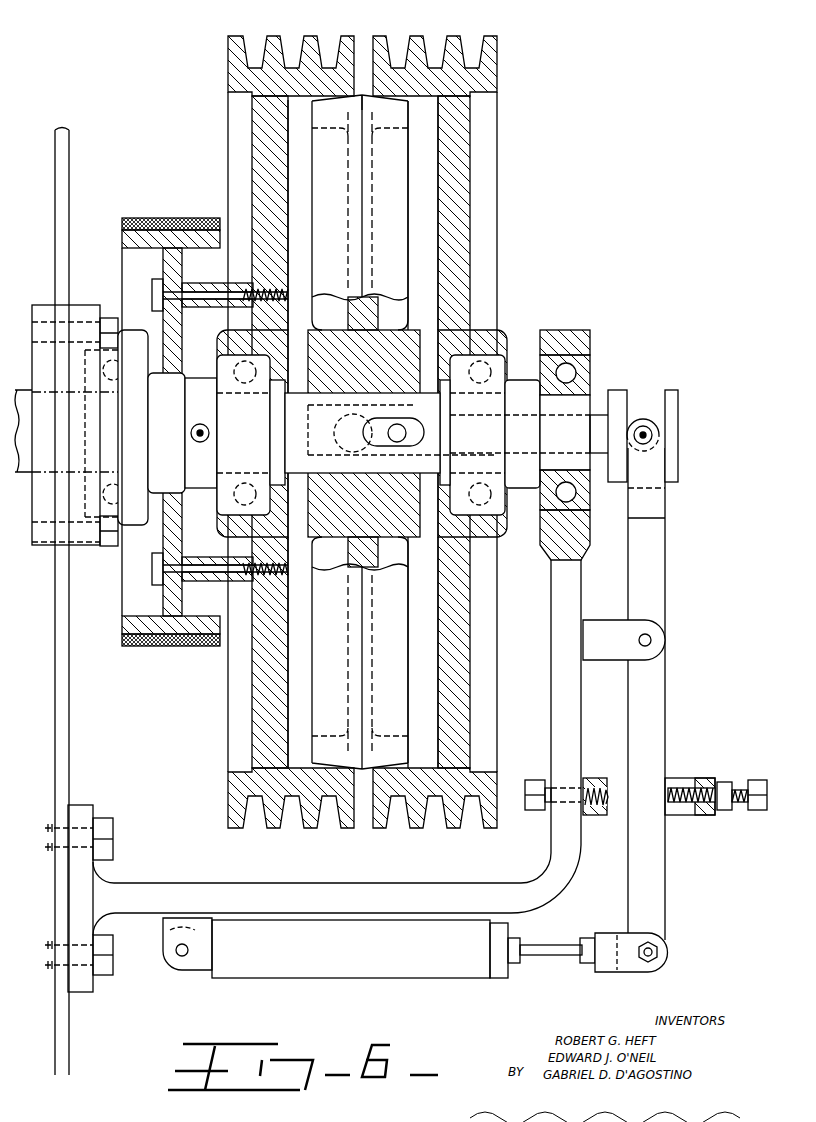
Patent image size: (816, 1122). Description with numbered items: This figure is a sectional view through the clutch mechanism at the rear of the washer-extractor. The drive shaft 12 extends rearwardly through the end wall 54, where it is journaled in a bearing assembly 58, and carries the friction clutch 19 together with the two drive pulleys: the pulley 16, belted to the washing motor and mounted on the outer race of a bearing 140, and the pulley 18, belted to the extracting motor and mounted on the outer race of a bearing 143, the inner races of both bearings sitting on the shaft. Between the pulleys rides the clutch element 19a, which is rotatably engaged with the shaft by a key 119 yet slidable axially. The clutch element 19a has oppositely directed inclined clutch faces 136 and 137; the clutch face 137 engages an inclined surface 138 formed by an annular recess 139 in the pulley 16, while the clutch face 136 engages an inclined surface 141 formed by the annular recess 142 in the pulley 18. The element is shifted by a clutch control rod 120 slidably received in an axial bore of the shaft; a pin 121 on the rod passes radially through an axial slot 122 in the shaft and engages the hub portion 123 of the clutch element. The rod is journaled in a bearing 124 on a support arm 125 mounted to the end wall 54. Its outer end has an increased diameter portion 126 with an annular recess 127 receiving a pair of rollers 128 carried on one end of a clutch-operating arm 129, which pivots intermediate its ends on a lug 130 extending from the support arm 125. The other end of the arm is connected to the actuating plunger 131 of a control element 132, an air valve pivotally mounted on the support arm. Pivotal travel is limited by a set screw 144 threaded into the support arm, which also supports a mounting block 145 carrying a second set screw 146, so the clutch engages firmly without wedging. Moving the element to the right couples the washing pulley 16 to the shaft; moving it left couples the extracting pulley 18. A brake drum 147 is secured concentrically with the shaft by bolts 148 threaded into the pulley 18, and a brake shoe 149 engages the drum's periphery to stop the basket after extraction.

The drive shaft 12 is at (32, 395).
The pulley 16 is at (497, 48).
The pulley 18 is at (236, 92).
The friction clutch 19 is at (412, 165).
The clutch element 19a is at (405, 213).
The end wall 54 is at (55, 143).
The bearing assembly 58 is at (128, 533).
The key 119 is at (442, 348).
The clutch control rod 120 is at (596, 420).
The pin 121 is at (406, 433).
The axial slot 122 is at (375, 446).
The hub portion 123 is at (405, 385).
The bearing 124 is at (590, 345).
The support arm 125 is at (556, 667).
The increased diameter portion 126 is at (676, 394).
The annular recess 127 is at (640, 420).
The rollers 128 is at (662, 436).
The clutch-operating arm 129 is at (657, 580).
The lug 130 is at (652, 640).
The actuating plunger 131 is at (550, 953).
The control element 132 is at (380, 965).
The clutch face 136 is at (322, 95).
The clutch face 137 is at (376, 84).
The inclined surface 138 is at (388, 90).
The annular recess 139 is at (430, 122).
The bearing 140 is at (515, 360).
The inclined surface 141 is at (291, 97).
The annular recess 142 is at (297, 143).
The bearing 143 is at (228, 407).
The set screw 144 is at (602, 800).
The mounting block 145 is at (708, 780).
The set screw 146 is at (678, 793).
The brake drum 147 is at (124, 236).
The bolts 148 is at (160, 290).
The brake shoe 149 is at (172, 219).